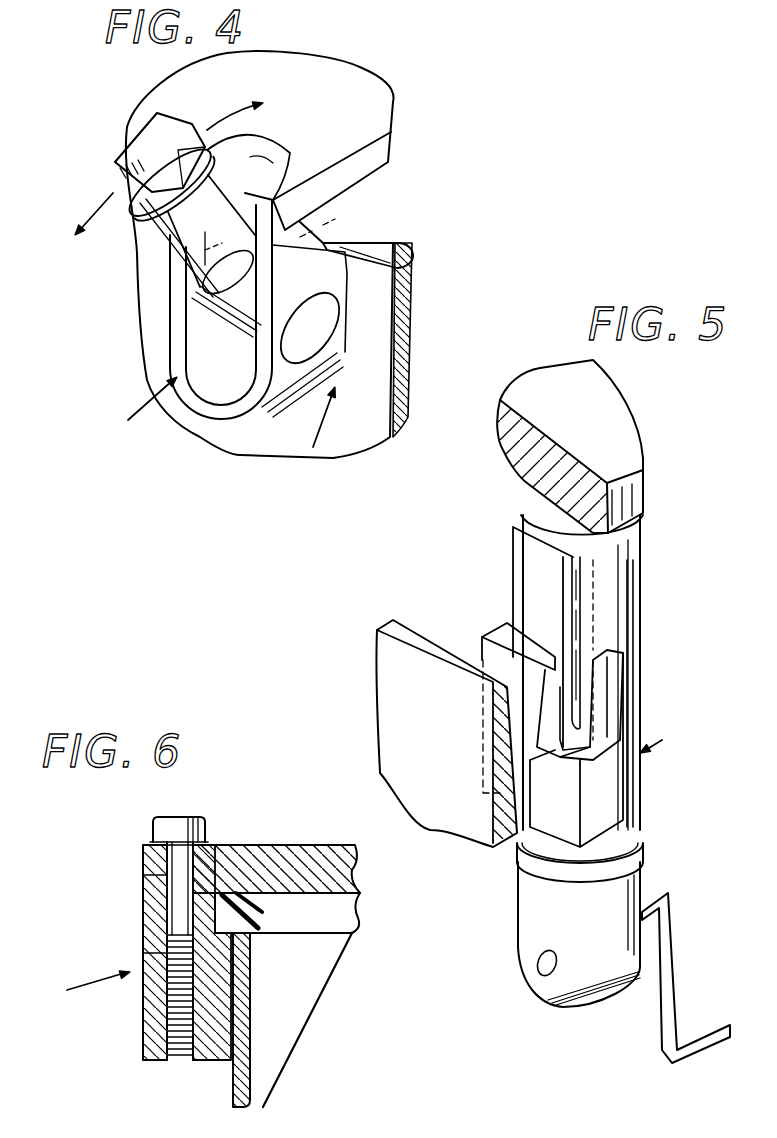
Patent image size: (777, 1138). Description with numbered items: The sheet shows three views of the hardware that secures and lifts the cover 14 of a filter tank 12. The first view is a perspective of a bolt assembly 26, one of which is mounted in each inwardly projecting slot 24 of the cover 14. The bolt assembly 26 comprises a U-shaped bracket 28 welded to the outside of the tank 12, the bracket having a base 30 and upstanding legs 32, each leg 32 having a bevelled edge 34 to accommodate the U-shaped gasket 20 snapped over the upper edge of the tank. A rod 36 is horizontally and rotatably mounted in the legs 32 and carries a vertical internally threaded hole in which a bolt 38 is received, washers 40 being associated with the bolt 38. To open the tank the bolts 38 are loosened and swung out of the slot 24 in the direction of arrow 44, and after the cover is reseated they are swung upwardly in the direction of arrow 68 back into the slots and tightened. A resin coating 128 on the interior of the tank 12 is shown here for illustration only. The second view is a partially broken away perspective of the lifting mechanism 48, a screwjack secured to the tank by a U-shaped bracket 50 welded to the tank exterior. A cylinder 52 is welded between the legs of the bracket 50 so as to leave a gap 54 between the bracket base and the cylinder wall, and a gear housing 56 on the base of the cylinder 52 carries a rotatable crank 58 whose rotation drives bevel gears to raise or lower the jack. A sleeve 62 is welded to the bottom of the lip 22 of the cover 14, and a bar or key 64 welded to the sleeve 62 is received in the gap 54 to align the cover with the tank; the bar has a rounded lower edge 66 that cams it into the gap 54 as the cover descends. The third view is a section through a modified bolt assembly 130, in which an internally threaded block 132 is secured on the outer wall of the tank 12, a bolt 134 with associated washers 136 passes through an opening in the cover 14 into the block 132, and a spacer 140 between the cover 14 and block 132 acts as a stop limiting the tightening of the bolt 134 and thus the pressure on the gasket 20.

In FIG. 4, the tank 12 is at (350, 430).
In FIG. 5, the tank 12 is at (442, 714).
In FIG. 6, the tank 12 is at (265, 1073).
In FIG. 4, the cover 14 is at (377, 107).
In FIG. 6, the cover 14 is at (290, 846).
In FIG. 4, the U-shaped gasket 20 is at (377, 240).
In FIG. 6, the U-shaped gasket 20 is at (352, 917).
In FIG. 5, the lip 22 is at (620, 440).
In FIG. 4, the slot 24 is at (283, 155).
In FIG. 4, the bolt assembly 26 is at (304, 420).
In FIG. 4, the U-shaped bracket 28 is at (140, 398).
In FIG. 4, the base 30 is at (220, 410).
In FIG. 4, the legs 32 is at (167, 303).
In FIG. 4, the bevelled edge 34 is at (333, 257).
In FIG. 4, the rod 36 is at (240, 320).
In FIG. 4, the bolt 38 is at (160, 120).
In FIG. 4, the washers 40 is at (245, 120).
In FIG. 4, the arrow 44 is at (95, 210).
In FIG. 5, the lifting mechanism 48 is at (670, 743).
In FIG. 5, the U-shaped bracket 50 is at (483, 637).
In FIG. 5, the cylinder 52 is at (627, 643).
In FIG. 5, the gap 54 is at (510, 627).
In FIG. 5, the gear housing 56 is at (527, 923).
In FIG. 5, the crank 58 is at (673, 987).
In FIG. 5, the sleeve 62 is at (623, 600).
In FIG. 5, the bar or key 64 is at (513, 543).
In FIG. 5, the rounded lower edge 66 is at (557, 757).
In FIG. 4, the arrow 68 is at (227, 112).
In FIG. 4, the resin coating 128 is at (410, 337).
In FIG. 6, the modified bolt assembly 130 is at (82, 971).
In FIG. 6, the internally threaded block 132 is at (147, 1043).
In FIG. 6, the bolt 134 is at (183, 817).
In FIG. 6, the washers 136 is at (157, 840).
In FIG. 6, the spacer 140 is at (143, 933).